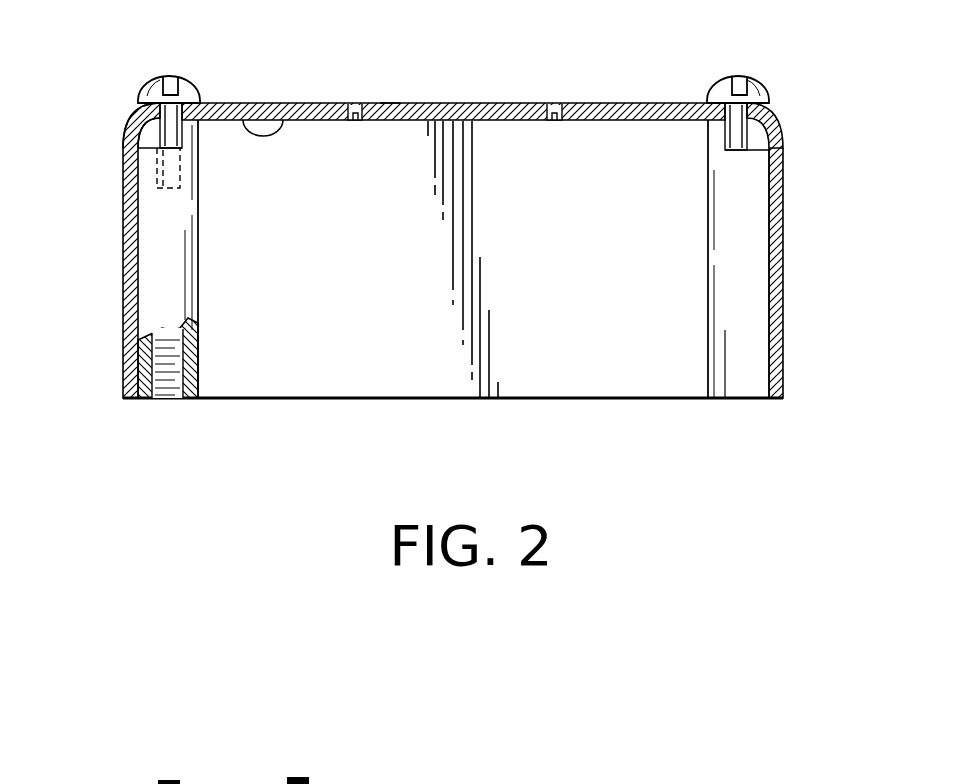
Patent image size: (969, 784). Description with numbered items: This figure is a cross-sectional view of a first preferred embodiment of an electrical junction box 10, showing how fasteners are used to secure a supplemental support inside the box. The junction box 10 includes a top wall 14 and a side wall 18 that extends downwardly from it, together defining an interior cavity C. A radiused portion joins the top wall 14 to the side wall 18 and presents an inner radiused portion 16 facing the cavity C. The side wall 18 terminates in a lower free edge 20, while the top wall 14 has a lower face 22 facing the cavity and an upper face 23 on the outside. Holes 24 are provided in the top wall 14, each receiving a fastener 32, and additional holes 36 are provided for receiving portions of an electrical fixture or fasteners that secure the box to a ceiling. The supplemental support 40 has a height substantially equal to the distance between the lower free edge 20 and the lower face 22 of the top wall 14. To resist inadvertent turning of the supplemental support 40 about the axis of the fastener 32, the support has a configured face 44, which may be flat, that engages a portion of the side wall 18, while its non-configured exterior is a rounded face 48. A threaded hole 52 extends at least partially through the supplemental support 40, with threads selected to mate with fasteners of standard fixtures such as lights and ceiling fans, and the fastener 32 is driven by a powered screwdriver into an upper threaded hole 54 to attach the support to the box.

The junction box 10 is at (110, 323).
The top wall 14 is at (583, 101).
The inner radiused portion 16 is at (784, 143).
The side wall 18 is at (784, 262).
The lower free edge 20 is at (776, 400).
The lower face 22 is at (283, 104).
The upper face 23 is at (390, 104).
The holes 24 is at (128, 140).
The fastener 32 is at (151, 81).
The additional holes 36 is at (352, 121).
The supplemental support 40 is at (203, 283).
The configured face 44 is at (784, 331).
The rounded face 48 is at (707, 372).
The threaded hole 52 is at (162, 400).
The upper threaded hole 54 is at (165, 190).
The cavity C is at (329, 412).